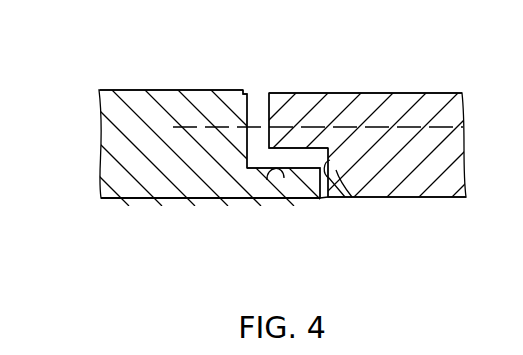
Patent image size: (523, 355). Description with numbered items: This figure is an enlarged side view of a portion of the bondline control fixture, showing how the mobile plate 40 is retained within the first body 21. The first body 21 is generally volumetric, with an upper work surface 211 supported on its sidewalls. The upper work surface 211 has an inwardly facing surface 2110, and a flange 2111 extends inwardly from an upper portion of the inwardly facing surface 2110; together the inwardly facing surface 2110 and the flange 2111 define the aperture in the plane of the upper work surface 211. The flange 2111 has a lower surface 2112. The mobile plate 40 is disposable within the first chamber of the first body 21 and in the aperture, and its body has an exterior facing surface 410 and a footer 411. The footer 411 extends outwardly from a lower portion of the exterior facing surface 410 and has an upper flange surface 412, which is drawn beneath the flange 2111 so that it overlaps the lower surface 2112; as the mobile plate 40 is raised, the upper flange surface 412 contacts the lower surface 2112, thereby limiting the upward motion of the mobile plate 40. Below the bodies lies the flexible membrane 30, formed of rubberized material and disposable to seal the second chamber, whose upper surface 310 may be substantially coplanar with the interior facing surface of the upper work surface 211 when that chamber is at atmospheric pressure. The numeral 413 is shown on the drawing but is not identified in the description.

The flexible membrane 30 is at (100, 193).
The mobile plate 40 is at (141, 126).
The exterior facing surface 410 is at (250, 95).
The footer 411 is at (283, 176).
The upper flange surface 412 is at (277, 198).
The top surface of first housing member 413 is at (209, 90).
The upper surface of the flexible membrane 310 is at (151, 199).
The first body 21 is at (430, 107).
The upper work surface 211 is at (388, 93).
The flange 2111 is at (305, 107).
The lower surface 2112 is at (313, 180).
The inwardly facing surface 2110 is at (340, 176).